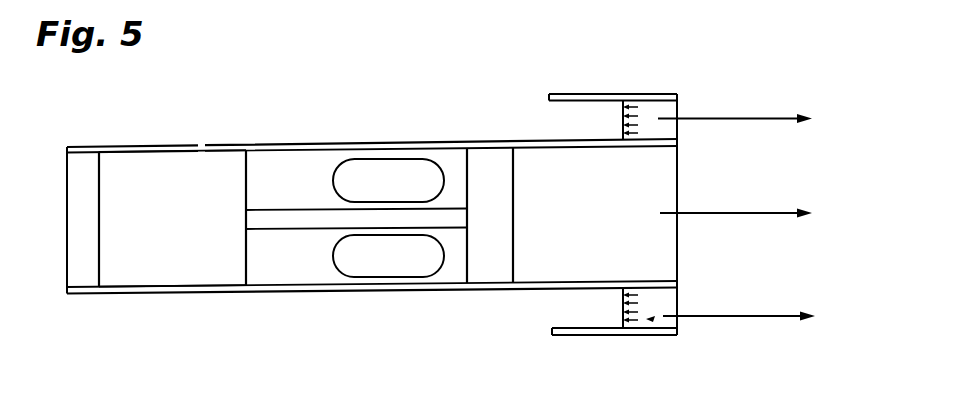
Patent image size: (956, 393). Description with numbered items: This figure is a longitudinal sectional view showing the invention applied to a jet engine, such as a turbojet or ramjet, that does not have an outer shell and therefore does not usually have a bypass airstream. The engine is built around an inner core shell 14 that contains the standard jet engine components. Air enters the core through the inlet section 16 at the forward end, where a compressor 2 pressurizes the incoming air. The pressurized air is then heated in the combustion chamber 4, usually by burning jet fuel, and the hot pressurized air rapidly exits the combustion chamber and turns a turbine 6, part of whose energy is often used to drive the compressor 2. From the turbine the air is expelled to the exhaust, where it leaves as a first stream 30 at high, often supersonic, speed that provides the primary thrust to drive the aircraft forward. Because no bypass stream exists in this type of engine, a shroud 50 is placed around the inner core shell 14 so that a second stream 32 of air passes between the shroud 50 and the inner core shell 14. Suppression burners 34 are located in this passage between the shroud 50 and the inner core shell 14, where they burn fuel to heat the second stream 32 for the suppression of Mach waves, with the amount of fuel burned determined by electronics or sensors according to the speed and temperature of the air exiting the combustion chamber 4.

The compressor 2 is at (180, 257).
The combustion chamber 4 is at (400, 187).
The turbine 6 is at (495, 275).
The inner core shell 14 is at (80, 146).
The inlet section 16 is at (75, 176).
The first stream 30 is at (766, 216).
The second stream 32 is at (766, 122).
The suppression burners 34 is at (650, 106).
The shroud 50 is at (538, 97).